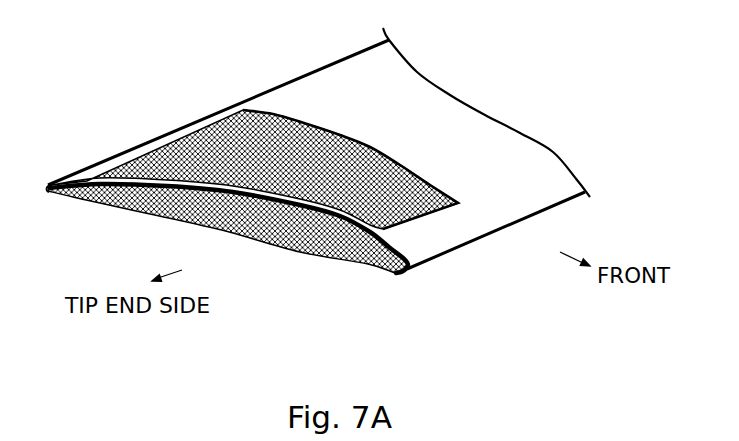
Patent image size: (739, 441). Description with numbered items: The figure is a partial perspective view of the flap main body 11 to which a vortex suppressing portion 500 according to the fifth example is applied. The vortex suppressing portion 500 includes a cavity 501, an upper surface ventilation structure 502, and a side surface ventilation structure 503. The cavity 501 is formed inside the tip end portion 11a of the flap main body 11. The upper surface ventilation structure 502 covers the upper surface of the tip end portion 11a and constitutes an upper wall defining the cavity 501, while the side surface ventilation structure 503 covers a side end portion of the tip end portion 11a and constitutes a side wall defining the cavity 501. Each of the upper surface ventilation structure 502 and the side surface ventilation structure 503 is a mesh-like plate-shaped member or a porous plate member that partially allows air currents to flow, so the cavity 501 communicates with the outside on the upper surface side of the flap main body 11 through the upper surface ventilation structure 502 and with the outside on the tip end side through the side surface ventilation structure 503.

The flap main body 11 is at (319, 172).
The tip end portion 11a is at (335, 85).
The vortex suppressing portion 500 is at (252, 222).
The cavity 501 is at (430, 235).
The upper surface ventilation structure 502 is at (217, 120).
The side surface ventilation structure 503 is at (303, 233).